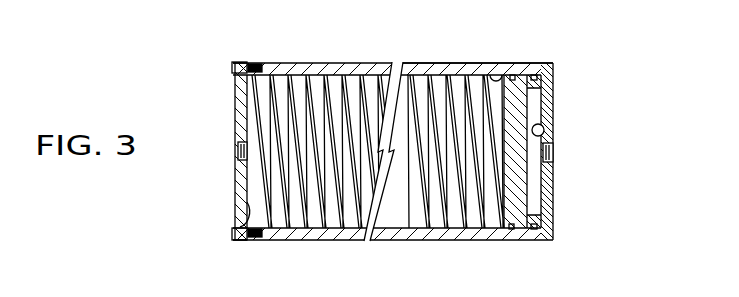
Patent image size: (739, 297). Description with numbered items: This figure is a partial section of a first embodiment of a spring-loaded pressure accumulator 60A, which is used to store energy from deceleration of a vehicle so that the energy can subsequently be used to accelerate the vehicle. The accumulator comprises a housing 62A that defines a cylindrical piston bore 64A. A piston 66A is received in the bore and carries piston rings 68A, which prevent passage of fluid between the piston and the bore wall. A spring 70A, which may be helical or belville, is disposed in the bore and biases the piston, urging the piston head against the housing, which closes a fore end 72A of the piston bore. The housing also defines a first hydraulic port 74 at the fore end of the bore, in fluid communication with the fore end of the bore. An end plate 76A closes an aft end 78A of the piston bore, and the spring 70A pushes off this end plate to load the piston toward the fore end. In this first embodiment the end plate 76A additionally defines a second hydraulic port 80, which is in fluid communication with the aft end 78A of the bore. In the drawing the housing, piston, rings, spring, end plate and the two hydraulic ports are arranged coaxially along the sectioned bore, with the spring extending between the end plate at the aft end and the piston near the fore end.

The pressure accumulator 60A is at (553, 92).
The housing 62A is at (517, 84).
The cylindrical piston bore 64A is at (497, 78).
The piston 66A is at (508, 70).
The piston rings 68A is at (512, 229).
The spring 70A is at (345, 229).
The fore end 72A is at (545, 134).
The first hydraulic port 74 is at (555, 150).
The end plate 76A is at (237, 103).
The aft end 78A is at (240, 227).
The second hydraulic port 80 is at (237, 152).